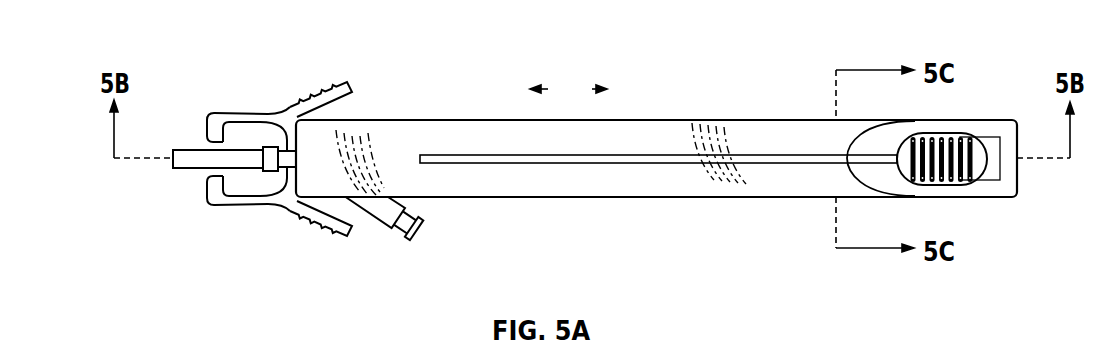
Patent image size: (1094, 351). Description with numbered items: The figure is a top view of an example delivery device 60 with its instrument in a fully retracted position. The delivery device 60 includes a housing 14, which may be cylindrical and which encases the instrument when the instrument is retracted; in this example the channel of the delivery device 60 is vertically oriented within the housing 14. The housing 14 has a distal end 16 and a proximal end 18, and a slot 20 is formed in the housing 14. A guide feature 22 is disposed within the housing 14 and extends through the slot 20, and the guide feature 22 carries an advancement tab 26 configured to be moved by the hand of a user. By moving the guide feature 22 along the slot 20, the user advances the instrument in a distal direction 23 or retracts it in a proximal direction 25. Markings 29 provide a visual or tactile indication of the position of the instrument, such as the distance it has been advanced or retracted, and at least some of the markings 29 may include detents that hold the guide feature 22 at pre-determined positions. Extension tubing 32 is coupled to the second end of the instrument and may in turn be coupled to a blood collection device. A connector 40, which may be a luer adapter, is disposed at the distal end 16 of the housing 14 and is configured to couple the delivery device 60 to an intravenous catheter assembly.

The housing 14 is at (450, 118).
The distal end 16 is at (330, 118).
The proximal end 18 is at (998, 118).
The slot 20 is at (660, 155).
The guide feature 22 is at (935, 130).
The distal direction 23 is at (548, 89).
The proximal direction 25 is at (592, 89).
The advancement tab 26 is at (977, 165).
The markings 29 is at (516, 164).
The extension tubing 32 is at (412, 230).
The connector 40 is at (250, 203).
The delivery device 60 is at (668, 38).